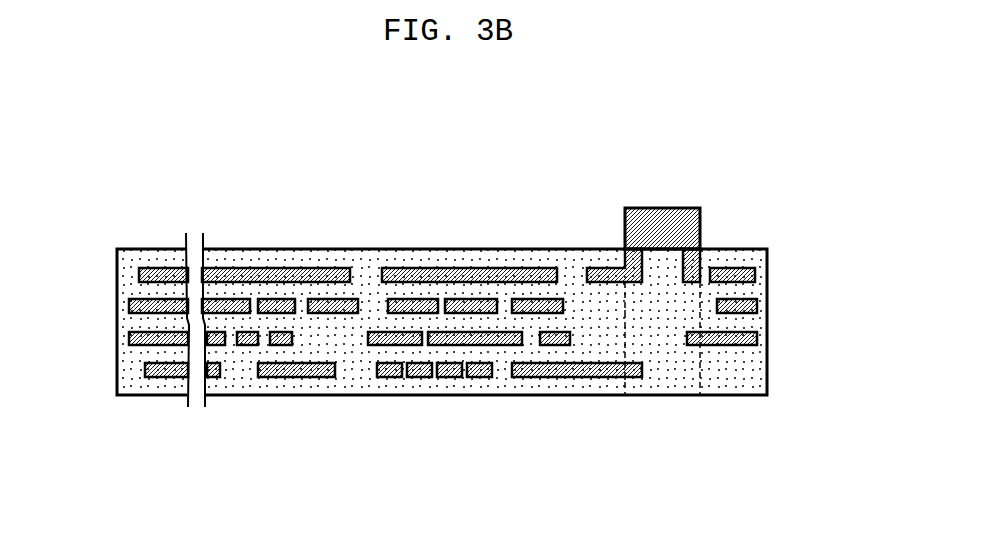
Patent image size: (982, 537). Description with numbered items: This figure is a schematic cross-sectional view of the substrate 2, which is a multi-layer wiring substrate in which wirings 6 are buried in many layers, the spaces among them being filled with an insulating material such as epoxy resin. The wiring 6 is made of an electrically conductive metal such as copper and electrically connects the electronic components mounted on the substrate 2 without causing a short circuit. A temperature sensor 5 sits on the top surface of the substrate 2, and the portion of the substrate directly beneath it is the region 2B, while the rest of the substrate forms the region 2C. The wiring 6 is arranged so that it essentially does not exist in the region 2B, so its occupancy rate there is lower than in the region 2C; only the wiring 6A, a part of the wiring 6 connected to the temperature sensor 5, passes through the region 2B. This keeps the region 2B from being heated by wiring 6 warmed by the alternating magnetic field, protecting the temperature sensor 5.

The substrate 2 is at (332, 247).
The region immediately below temperature sensor 2B is at (665, 380).
The region other than region immediately below temperature sensor 2C is at (367, 380).
The temperature sensor 5 is at (662, 208).
The wiring 6 is at (468, 265).
The wiring connected to temperature sensor 6A is at (627, 265).